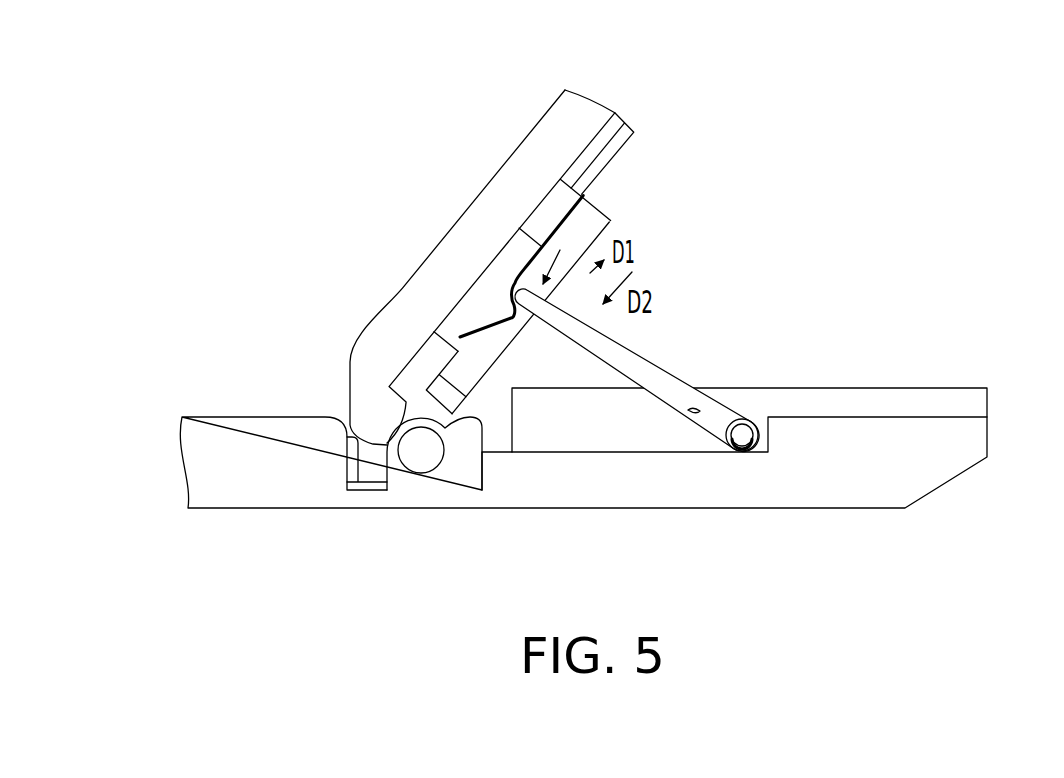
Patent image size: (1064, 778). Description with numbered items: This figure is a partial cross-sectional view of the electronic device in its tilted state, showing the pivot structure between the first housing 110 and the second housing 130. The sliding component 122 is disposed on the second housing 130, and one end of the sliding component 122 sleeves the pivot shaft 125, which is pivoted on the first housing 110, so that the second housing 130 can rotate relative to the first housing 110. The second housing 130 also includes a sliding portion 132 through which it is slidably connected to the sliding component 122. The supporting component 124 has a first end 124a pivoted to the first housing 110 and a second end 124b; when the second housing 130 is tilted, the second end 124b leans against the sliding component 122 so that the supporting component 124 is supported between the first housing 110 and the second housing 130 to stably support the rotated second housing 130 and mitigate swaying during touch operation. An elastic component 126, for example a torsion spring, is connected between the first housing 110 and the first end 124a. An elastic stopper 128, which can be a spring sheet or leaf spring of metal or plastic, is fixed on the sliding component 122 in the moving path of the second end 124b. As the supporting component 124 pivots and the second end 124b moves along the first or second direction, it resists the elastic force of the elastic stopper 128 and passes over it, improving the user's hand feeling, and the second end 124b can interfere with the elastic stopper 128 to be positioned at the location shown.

The first housing 110 is at (915, 477).
The sliding component 122 is at (547, 213).
The supporting component 124 is at (666, 372).
The first end 124a is at (749, 406).
The second end 124b is at (612, 222).
The pivot shaft 125 is at (421, 452).
The elastic component 126 is at (742, 437).
The elastic stopper 128 is at (498, 322).
The second housing 130 is at (443, 260).
The sliding portion 132 is at (623, 137).